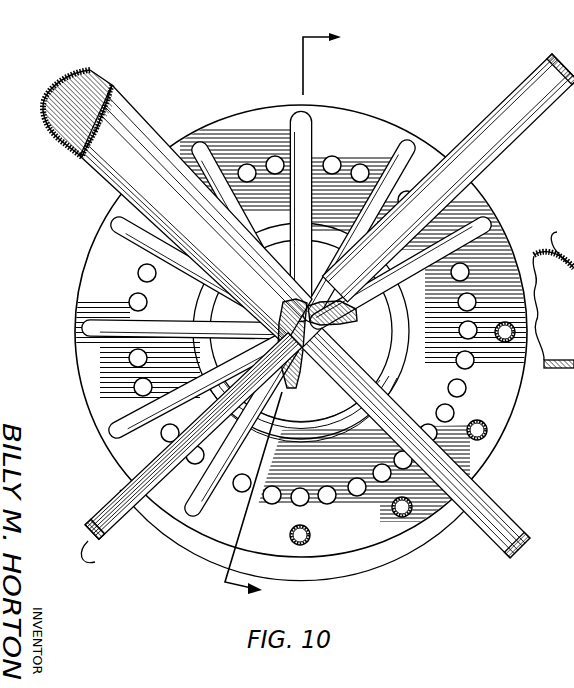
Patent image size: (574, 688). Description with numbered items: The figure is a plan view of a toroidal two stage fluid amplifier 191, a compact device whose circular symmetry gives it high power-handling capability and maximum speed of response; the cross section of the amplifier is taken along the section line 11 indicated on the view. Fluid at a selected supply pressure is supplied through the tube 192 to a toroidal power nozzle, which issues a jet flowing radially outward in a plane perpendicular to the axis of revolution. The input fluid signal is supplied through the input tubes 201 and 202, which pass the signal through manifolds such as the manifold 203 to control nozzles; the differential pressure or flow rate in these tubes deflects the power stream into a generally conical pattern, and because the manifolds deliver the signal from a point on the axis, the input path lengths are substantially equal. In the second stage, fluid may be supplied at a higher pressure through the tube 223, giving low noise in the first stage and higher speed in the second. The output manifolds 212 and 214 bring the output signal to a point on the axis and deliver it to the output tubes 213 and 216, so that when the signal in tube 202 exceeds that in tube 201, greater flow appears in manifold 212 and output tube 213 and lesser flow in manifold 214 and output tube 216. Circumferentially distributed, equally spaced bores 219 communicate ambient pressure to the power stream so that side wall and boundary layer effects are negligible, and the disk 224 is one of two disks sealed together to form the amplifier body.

The section line 11— 11 is at (293, 317).
The toroidal two stage fluid amplifier 191 is at (217, 551).
The tube 192 is at (127, 521).
The input tube 201 is at (484, 490).
The input tube 202 is at (503, 553).
The manifold 203 is at (347, 383).
The manifold 212 is at (573, 446).
The output tube 213 is at (100, 72).
The manifold 214 is at (400, 152).
The output tube 216 is at (132, 107).
The bores 219 is at (454, 408).
The tube 223 is at (520, 93).
The disk 224 is at (365, 546).